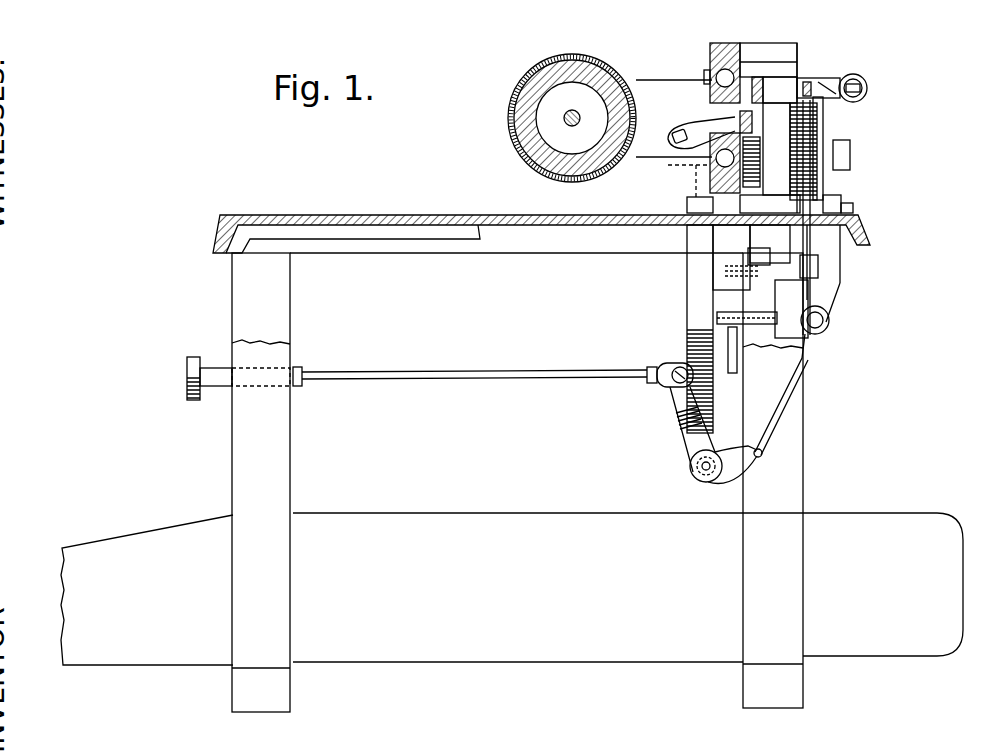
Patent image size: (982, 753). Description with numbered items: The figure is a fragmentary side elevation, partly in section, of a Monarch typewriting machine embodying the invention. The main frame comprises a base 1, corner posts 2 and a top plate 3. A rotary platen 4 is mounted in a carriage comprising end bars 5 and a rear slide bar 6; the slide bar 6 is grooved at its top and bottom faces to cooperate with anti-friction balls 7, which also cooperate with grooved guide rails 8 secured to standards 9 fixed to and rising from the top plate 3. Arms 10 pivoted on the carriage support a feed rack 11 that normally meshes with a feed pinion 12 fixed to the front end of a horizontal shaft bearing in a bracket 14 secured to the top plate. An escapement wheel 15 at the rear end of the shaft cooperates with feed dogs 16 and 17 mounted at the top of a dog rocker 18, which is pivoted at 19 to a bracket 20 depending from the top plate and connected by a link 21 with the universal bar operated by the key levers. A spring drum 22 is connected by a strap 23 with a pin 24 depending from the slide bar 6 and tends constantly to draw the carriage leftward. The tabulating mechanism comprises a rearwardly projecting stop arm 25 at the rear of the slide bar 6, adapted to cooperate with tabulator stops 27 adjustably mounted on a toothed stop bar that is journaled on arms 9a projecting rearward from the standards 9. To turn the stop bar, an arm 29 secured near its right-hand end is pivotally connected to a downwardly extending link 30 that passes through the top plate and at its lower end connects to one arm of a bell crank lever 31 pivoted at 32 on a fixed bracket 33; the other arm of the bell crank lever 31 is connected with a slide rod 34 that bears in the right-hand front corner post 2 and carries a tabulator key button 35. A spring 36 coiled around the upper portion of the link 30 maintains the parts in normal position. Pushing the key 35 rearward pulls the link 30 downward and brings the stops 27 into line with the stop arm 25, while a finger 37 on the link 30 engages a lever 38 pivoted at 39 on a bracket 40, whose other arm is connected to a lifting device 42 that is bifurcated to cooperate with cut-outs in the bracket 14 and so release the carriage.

The base 1 is at (372, 522).
The corner posts 2 is at (288, 437).
The top plate 3 is at (410, 215).
The rotary platen 4 is at (578, 60).
The end bars 5 is at (644, 86).
The slide bar 6 is at (712, 93).
The anti-friction balls 7 is at (714, 78).
The guide rails 8 is at (727, 44).
The standards 9 is at (769, 44).
The arms 9a is at (832, 76).
The arms 10 is at (686, 126).
The feed rack 11 is at (748, 122).
The feed pinion 12 is at (774, 136).
The bracket 14 is at (762, 204).
The escapement wheel 15 is at (822, 140).
The feed dog 16 is at (822, 198).
The feed dog 17 is at (853, 208).
The dog rocker 18 is at (828, 293).
The pivot 19 is at (823, 323).
The bracket 20 is at (783, 340).
The link 21 is at (737, 366).
The spring drum 22 is at (690, 309).
The strap 23 is at (688, 201).
The pin 24 is at (673, 174).
The stop arm 25 is at (797, 43).
The tabulator stops 27 is at (853, 74).
The arm 29 is at (818, 77).
The link 30 is at (802, 365).
The bell crank lever 31 is at (690, 446).
The pivot 32 is at (706, 482).
The bracket 33 is at (727, 420).
The slide rod 34 is at (450, 379).
The tabulator key button 35 is at (187, 369).
The spring 36 is at (850, 157).
The finger 37 is at (812, 268).
The lever 38 is at (773, 274).
The pivot 39 is at (748, 257).
The bracket 40 is at (735, 270).
The lifting device 42 is at (728, 229).